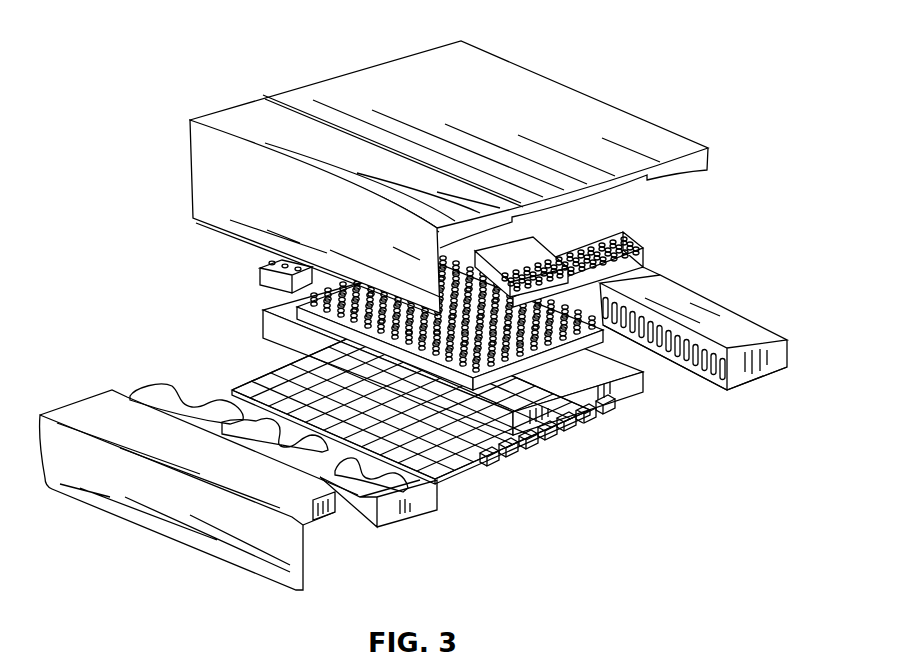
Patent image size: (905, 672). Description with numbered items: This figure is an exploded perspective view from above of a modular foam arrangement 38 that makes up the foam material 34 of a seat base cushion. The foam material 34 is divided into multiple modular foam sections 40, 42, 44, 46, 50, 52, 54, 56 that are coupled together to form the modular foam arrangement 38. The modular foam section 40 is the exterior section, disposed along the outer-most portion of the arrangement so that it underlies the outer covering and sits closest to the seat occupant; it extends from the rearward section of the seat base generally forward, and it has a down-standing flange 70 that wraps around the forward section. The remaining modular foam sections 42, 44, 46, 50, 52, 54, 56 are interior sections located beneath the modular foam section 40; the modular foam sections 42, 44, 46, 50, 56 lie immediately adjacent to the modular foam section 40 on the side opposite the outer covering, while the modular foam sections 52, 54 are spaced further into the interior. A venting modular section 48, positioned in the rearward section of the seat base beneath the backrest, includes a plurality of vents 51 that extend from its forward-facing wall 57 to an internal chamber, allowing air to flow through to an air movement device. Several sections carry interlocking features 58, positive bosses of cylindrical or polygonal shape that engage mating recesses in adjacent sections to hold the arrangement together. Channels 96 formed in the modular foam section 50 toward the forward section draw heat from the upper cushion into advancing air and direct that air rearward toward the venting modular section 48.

The foam material 34 is at (232, 110).
The modular foam arrangement 38 is at (672, 33).
The modular foam section 40 is at (527, 88).
The modular foam section 42 is at (258, 277).
The modular foam section 44 is at (643, 262).
The modular foam section 46 is at (567, 349).
The venting modular section 48 is at (702, 357).
The modular foam section 50 is at (392, 514).
The vents 51 is at (667, 330).
The modular foam section 52 is at (563, 405).
The modular foam section 54 is at (507, 447).
The modular foam section 56 is at (313, 517).
The forward-facing wall 57 is at (716, 392).
The interlocking features 58 is at (592, 322).
The down-standing flange 70 is at (245, 204).
The channels 96 is at (197, 383).